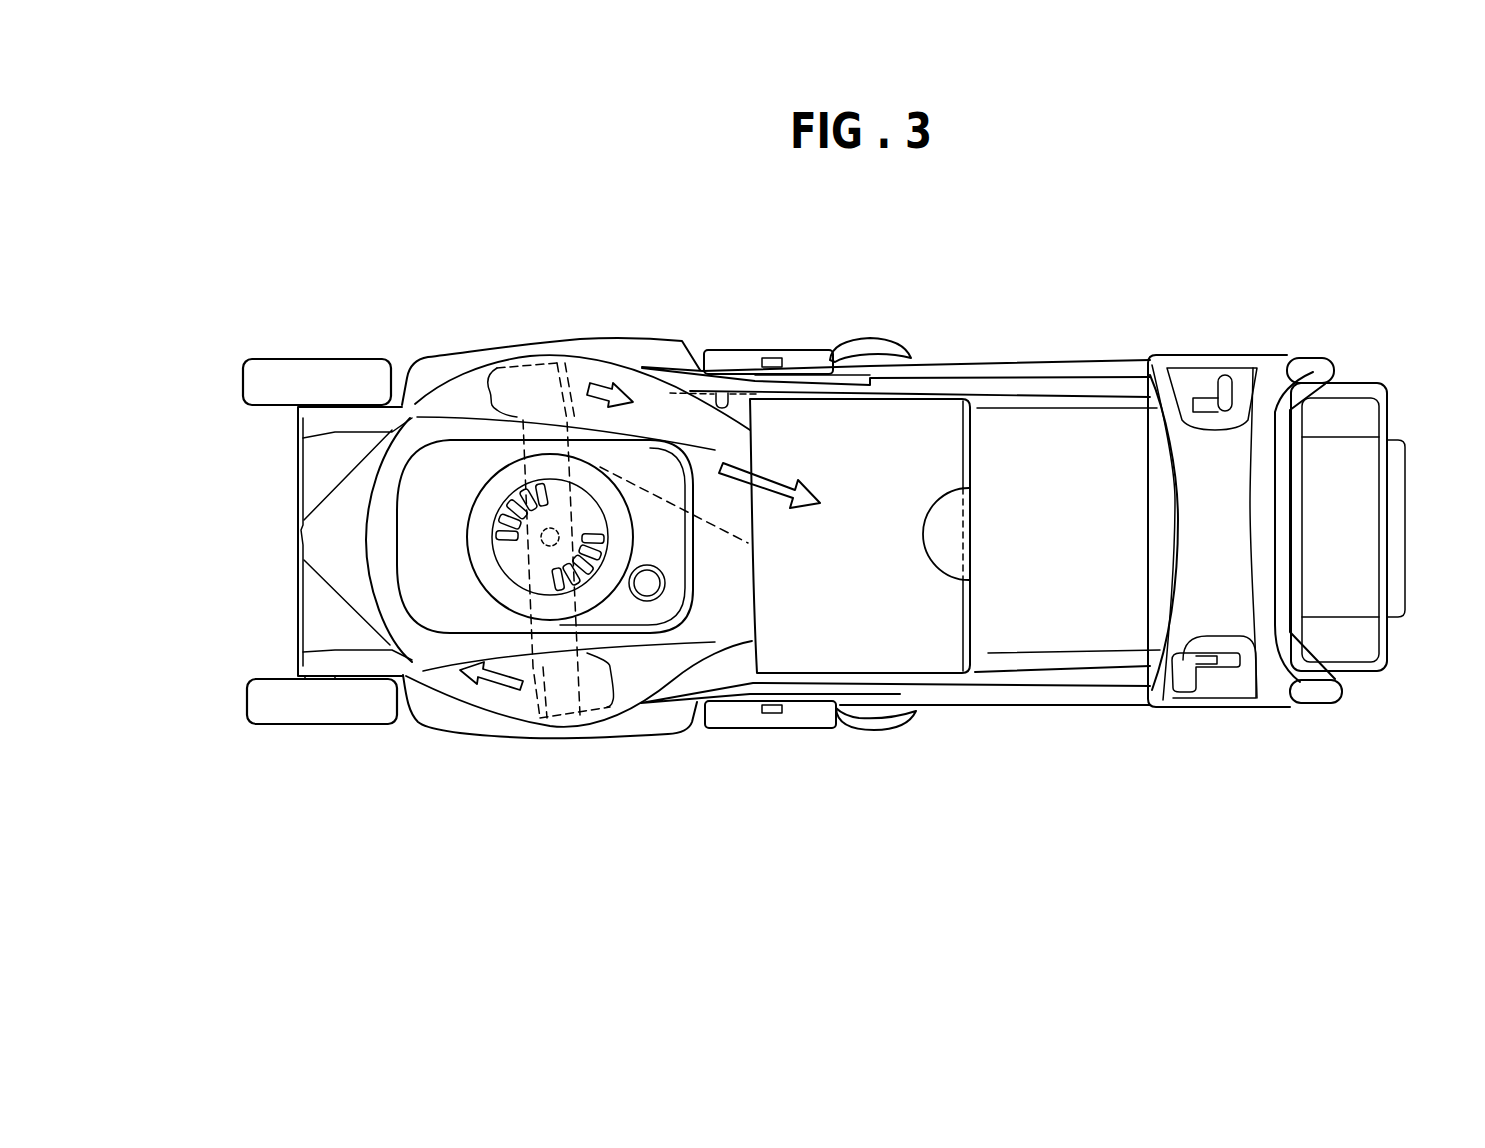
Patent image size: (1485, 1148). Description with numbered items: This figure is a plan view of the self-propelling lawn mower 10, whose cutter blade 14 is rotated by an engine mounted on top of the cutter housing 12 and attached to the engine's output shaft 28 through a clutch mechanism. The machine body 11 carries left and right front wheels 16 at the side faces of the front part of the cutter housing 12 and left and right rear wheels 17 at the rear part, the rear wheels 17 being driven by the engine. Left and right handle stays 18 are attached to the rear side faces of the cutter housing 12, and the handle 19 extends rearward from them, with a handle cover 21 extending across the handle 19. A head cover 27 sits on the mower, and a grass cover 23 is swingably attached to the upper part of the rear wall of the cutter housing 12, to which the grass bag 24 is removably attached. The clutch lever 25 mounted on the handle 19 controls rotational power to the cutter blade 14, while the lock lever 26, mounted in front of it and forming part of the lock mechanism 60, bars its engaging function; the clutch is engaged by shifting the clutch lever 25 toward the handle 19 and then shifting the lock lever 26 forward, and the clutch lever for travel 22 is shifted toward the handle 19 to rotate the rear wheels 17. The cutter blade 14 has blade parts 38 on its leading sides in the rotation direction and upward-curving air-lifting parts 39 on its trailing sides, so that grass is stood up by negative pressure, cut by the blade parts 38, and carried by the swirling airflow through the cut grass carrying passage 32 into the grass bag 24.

The lawn mower 10 is at (262, 185).
The machine body 11 is at (250, 537).
The cutter housing 12 is at (630, 743).
The cutter blade 14 is at (533, 340).
The front wheels 16 is at (313, 360).
The rear wheels 17 is at (807, 345).
The handle stays 18 is at (682, 356).
The handle 19 is at (998, 362).
The handle cover 21 is at (1200, 720).
The clutch lever for travel 22 is at (1368, 425).
The grass cover 23 is at (915, 395).
The grass bag 24 is at (1030, 405).
The clutch lever 25 is at (1348, 383).
The lock lever 26 is at (1215, 388).
The head cover 27 is at (440, 456).
The output shaft 28 is at (547, 543).
The cut grass carrying passage 32 is at (724, 392).
The blade parts 38 is at (568, 355).
The air-lifting parts 39 is at (498, 360).
The lock mechanism 60 is at (1237, 350).